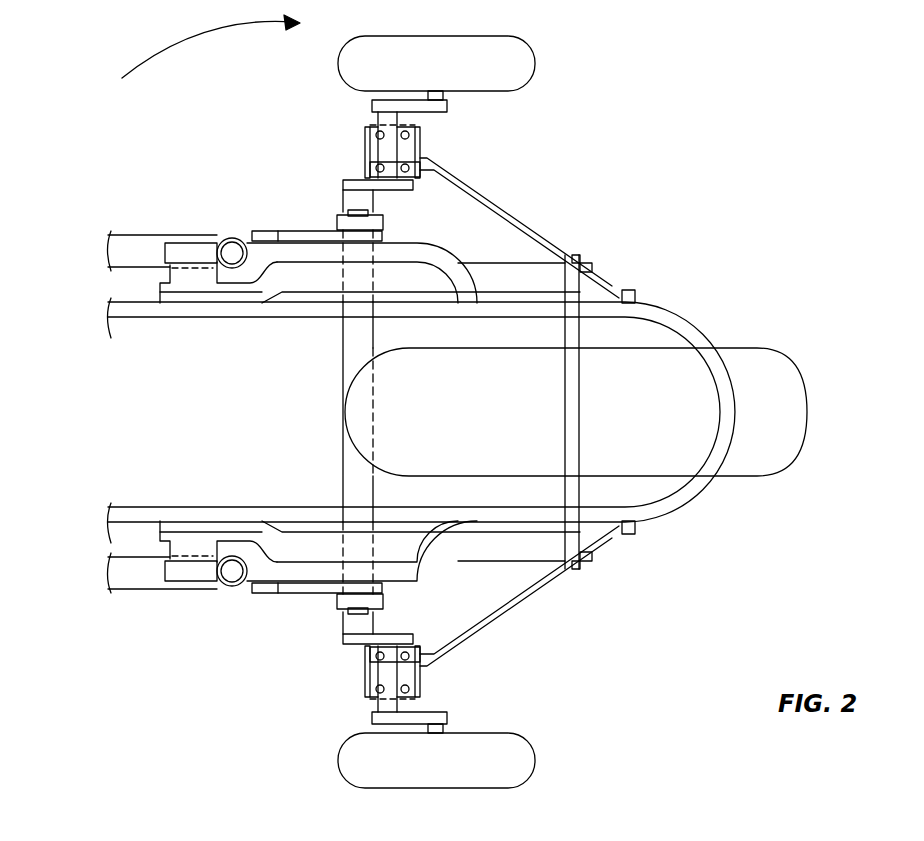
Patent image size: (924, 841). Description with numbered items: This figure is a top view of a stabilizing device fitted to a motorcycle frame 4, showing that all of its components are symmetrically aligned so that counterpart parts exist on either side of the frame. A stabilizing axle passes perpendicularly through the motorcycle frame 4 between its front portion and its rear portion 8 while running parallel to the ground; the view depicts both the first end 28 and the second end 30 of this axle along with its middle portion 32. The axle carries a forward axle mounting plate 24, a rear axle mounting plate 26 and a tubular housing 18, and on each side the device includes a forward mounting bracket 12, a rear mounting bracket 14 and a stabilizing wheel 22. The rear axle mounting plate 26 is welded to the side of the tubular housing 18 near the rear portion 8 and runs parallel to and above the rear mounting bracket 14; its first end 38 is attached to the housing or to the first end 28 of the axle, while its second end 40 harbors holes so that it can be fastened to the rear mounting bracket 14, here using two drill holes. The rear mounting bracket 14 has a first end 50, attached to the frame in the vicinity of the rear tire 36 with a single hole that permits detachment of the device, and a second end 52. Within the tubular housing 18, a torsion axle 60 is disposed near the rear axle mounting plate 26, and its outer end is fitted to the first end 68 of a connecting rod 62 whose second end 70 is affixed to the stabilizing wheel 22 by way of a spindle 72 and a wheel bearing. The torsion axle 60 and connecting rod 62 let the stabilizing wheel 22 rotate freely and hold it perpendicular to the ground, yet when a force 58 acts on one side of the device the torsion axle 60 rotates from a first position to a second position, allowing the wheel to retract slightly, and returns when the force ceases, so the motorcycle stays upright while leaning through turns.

The motorcycle frame 4 is at (240, 232).
The rear portion 8 is at (678, 304).
The forward mounting bracket 12 is at (262, 600).
The rear mounting bracket 14 is at (537, 598).
The tubular housing 18 is at (365, 672).
The stabilizing wheel 22 is at (535, 771).
The forward axle mounting plate 24 is at (340, 212).
The rear axle mounting plate 26 is at (405, 681).
The first end 28 is at (362, 126).
The second end 30 is at (384, 223).
The middle portion 32 is at (343, 477).
The rear tire 36 is at (806, 379).
The first end 38 is at (372, 142).
The second end 40 is at (425, 155).
The first end 50 is at (430, 163).
The second end 52 is at (635, 293).
The force 58 is at (211, 47).
The torsion axle 60 is at (400, 116).
The connecting rod 62 is at (370, 720).
The first end 68 is at (372, 104).
The second end 70 is at (447, 103).
The spindle 72 is at (445, 728).